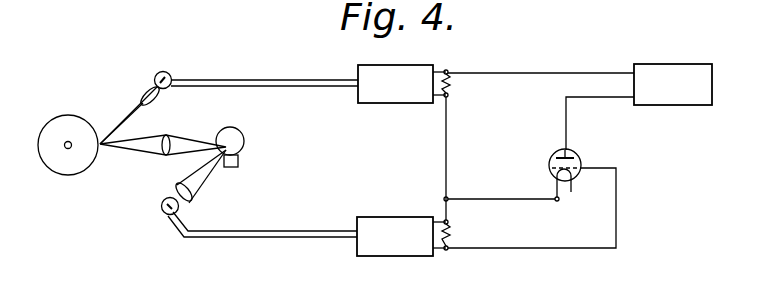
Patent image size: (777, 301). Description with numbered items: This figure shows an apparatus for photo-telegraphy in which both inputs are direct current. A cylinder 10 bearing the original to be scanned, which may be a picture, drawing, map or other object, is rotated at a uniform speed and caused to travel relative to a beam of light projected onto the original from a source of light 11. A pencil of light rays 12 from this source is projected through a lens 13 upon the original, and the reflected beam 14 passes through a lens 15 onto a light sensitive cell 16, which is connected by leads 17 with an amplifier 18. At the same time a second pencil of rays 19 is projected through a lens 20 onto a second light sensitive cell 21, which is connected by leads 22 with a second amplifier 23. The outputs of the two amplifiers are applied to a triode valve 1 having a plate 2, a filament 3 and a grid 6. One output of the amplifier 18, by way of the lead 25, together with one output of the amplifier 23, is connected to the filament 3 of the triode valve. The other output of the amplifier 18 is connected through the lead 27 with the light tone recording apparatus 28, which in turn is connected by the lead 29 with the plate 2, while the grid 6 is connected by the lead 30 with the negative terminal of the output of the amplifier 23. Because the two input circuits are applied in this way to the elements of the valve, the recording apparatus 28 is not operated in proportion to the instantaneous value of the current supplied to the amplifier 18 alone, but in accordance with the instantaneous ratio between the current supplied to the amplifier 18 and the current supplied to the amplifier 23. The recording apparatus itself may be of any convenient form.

The triode valve 1 is at (583, 160).
The plate 2 is at (560, 156).
The filament 3 is at (573, 187).
The grid 6 is at (552, 176).
The cylinder 10 is at (58, 118).
The source of light 11 is at (245, 145).
The pencil of light rays 12 is at (193, 142).
The lens 13 is at (170, 138).
The reflected beam 14 is at (129, 114).
The lens 15 is at (149, 84).
The light sensitive cell 16 is at (170, 75).
The leads 17 is at (287, 83).
The amplifier 18 is at (410, 82).
The pencil of rays 19 is at (200, 178).
The lens 20 is at (177, 192).
The light sensitive cell 21 is at (164, 212).
The leads 22 is at (288, 232).
The amplifier 23 is at (409, 234).
The lead 25 is at (448, 155).
The lead 27 is at (543, 73).
The light tone recording apparatus 28 is at (673, 84).
The lead 29 is at (605, 100).
The lead 30 is at (616, 205).